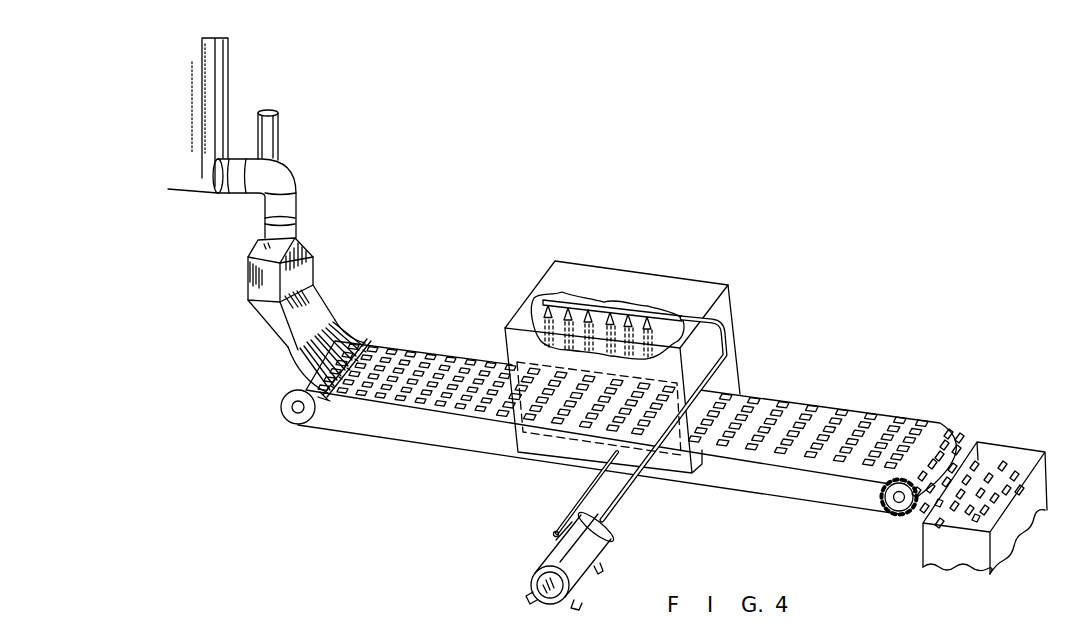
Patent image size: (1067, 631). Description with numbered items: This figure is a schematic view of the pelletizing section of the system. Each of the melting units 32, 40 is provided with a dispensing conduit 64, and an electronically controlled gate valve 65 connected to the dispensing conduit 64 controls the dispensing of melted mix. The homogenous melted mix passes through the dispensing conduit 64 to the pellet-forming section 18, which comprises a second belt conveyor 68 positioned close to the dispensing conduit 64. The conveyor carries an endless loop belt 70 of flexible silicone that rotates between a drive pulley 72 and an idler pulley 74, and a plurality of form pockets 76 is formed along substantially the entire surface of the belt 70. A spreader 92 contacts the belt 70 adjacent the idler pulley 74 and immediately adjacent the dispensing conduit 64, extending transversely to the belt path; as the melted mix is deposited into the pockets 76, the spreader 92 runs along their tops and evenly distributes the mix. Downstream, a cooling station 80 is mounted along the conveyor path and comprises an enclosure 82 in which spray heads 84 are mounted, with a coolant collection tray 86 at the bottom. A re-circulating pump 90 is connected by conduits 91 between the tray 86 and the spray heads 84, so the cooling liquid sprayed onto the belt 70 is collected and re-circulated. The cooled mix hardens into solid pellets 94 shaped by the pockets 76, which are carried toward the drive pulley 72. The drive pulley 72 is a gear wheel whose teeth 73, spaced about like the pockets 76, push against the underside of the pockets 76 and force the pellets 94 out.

The pellet-forming section 18 is at (654, 197).
The melting unit 32 is at (229, 88).
The melting unit 40 is at (236, 115).
The dispensing conduit 64 is at (314, 262).
The gate valve 65 is at (279, 133).
The second belt conveyor 68 is at (432, 434).
The endless loop belt 70 is at (787, 415).
The drive pulley 72 is at (900, 508).
The teeth 73 is at (882, 502).
The idler pulley 74 is at (293, 418).
The form pockets 76 is at (452, 360).
The cooling station 80 is at (617, 266).
The enclosure 82 is at (575, 278).
The spray heads 84 is at (643, 322).
The coolant collection tray 86 is at (583, 447).
The re-circulating pump 90 is at (594, 543).
The conduits 91 is at (725, 340).
The spreader 92 is at (367, 337).
The solid pellets 94 is at (897, 425).